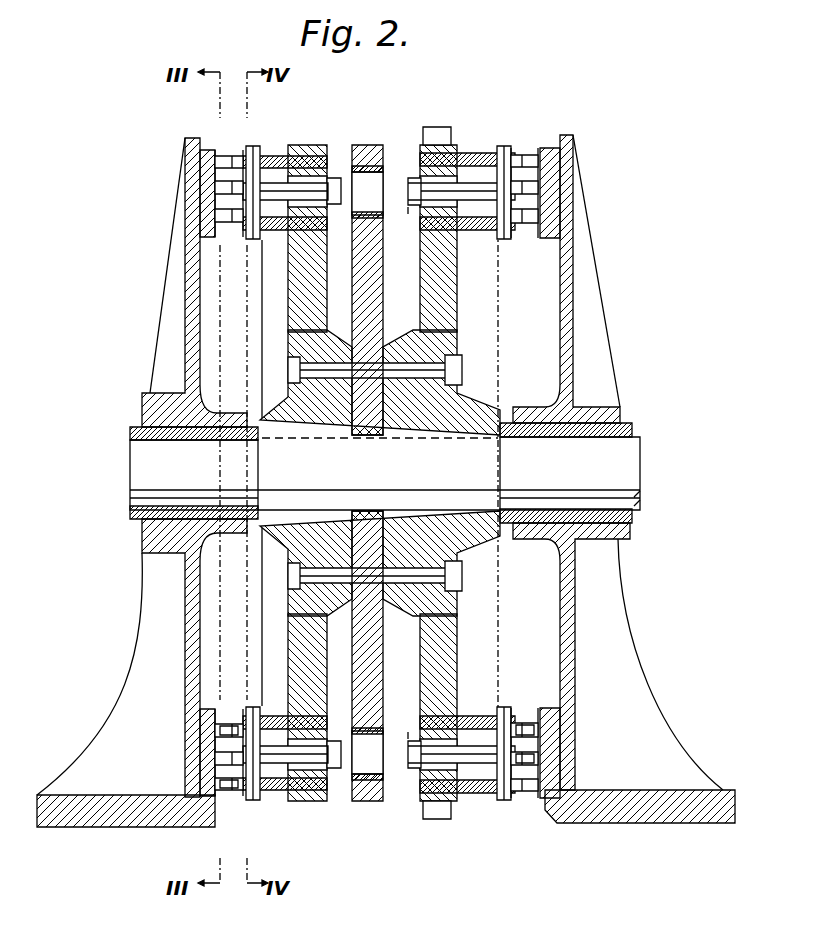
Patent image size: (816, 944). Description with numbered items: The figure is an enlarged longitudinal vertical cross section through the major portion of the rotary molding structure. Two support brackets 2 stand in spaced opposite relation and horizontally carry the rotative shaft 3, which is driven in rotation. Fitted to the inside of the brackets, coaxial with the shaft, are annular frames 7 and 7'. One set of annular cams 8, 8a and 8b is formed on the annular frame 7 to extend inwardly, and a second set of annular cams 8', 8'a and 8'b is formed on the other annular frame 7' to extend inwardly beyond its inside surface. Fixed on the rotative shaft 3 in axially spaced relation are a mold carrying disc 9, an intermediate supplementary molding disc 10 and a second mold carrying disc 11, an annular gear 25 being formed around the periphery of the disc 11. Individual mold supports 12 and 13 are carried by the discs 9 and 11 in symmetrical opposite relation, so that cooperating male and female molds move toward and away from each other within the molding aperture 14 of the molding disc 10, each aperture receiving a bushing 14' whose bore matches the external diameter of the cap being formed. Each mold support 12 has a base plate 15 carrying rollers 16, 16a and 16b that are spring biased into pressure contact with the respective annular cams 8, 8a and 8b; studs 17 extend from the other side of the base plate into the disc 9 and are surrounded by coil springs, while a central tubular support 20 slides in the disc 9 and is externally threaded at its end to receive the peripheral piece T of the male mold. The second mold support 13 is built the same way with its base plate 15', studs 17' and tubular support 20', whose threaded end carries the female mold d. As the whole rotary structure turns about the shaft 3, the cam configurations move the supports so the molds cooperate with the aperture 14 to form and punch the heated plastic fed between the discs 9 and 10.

The support brackets 2 is at (146, 548).
The rotative shaft 3 is at (625, 460).
The annular frame 7 is at (162, 473).
The annular frame 7' is at (611, 473).
The annular cam 8 is at (126, 824).
The annular cam 8a is at (225, 765).
The annular cam 8b is at (225, 717).
The annular cam 8' is at (640, 790).
The annular cam 8'a is at (611, 737).
The annular cam 8'b is at (600, 700).
The mold carrying disc 9 is at (314, 145).
The molding disc 10 is at (388, 262).
The second mold carrying disc 11 is at (437, 128).
The mold support 12 is at (262, 137).
The second mold support 13 is at (534, 134).
The molding aperture 14 is at (367, 689).
The bushing 14' is at (388, 154).
The base plate 15 is at (192, 504).
The base plate 15' is at (576, 506).
The roller 16 is at (218, 150).
The roller 16a is at (225, 188).
The roller 16b is at (225, 215).
The studs 17 is at (285, 822).
The studs 17' is at (470, 474).
The tubular support 20 is at (285, 481).
The tubular support 20' is at (483, 476).
The annular gear 25 is at (440, 820).
The peripheral piece T is at (333, 182).
The female mold d is at (413, 212).